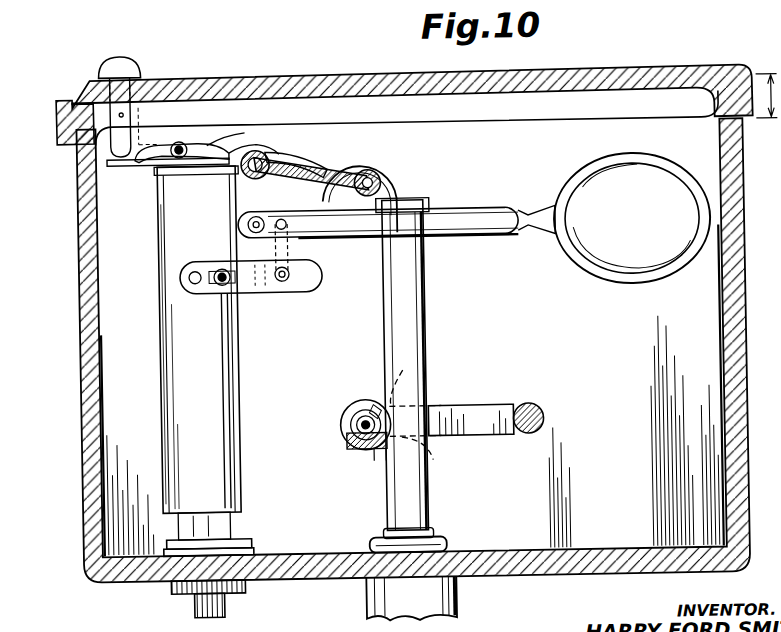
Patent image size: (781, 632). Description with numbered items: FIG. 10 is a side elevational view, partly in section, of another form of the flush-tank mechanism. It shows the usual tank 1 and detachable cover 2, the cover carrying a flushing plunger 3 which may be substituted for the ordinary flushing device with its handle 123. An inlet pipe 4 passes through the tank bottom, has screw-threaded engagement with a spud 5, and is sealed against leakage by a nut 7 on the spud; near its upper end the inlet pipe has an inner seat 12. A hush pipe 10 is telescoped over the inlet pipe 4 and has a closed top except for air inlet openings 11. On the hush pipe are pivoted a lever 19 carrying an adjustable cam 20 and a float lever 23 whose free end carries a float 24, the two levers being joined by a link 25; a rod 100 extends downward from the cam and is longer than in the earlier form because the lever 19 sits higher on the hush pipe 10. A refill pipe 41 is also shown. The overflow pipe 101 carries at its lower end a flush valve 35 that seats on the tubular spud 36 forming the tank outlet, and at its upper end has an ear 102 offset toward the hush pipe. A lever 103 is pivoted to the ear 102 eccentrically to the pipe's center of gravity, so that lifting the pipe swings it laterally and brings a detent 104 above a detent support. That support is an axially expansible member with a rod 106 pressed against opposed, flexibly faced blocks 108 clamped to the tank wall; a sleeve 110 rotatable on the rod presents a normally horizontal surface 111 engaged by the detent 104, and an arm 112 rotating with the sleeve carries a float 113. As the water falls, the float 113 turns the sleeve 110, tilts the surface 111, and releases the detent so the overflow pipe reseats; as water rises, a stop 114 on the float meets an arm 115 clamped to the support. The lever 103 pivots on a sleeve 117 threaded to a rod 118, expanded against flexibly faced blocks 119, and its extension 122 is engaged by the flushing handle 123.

The tank 1 is at (80, 240).
The detachable cover 2 is at (84, 88).
The flushing plunger 3 is at (126, 50).
The inlet pipe 4 is at (188, 522).
The spud 5 is at (222, 600).
The nut 7 is at (177, 590).
The hush pipe 10 is at (190, 345).
The air inlet openings 11 is at (55, 118).
The inner seat 12 is at (768, 95).
The lever 19 is at (253, 285).
The adjustable cam 20 is at (205, 291).
The float lever 23 is at (335, 240).
The float ball 24 is at (632, 218).
The link 25 is at (300, 268).
The flush valve 35 is at (440, 535).
The tubular spud 36 is at (452, 600).
The refill pipe 41 is at (370, 169).
The rod 100 is at (229, 362).
The overflow pipe 101 is at (426, 302).
The ear 102 is at (396, 180).
The lever 103 is at (300, 166).
The detent 104 is at (368, 452).
The rod 106 is at (352, 446).
The blocks 108 is at (352, 405).
The sleeve 110 is at (352, 424).
The horizontal surface 111 is at (364, 408).
The arm 112 is at (465, 405).
The float 113 is at (541, 416).
The stop 114 is at (432, 444).
The arm 115 is at (422, 370).
The sleeve 117 is at (262, 150).
The rod 118 is at (286, 152).
The blocks 119 is at (242, 149).
The extension 122 is at (118, 162).
The handle 123 is at (102, 165).